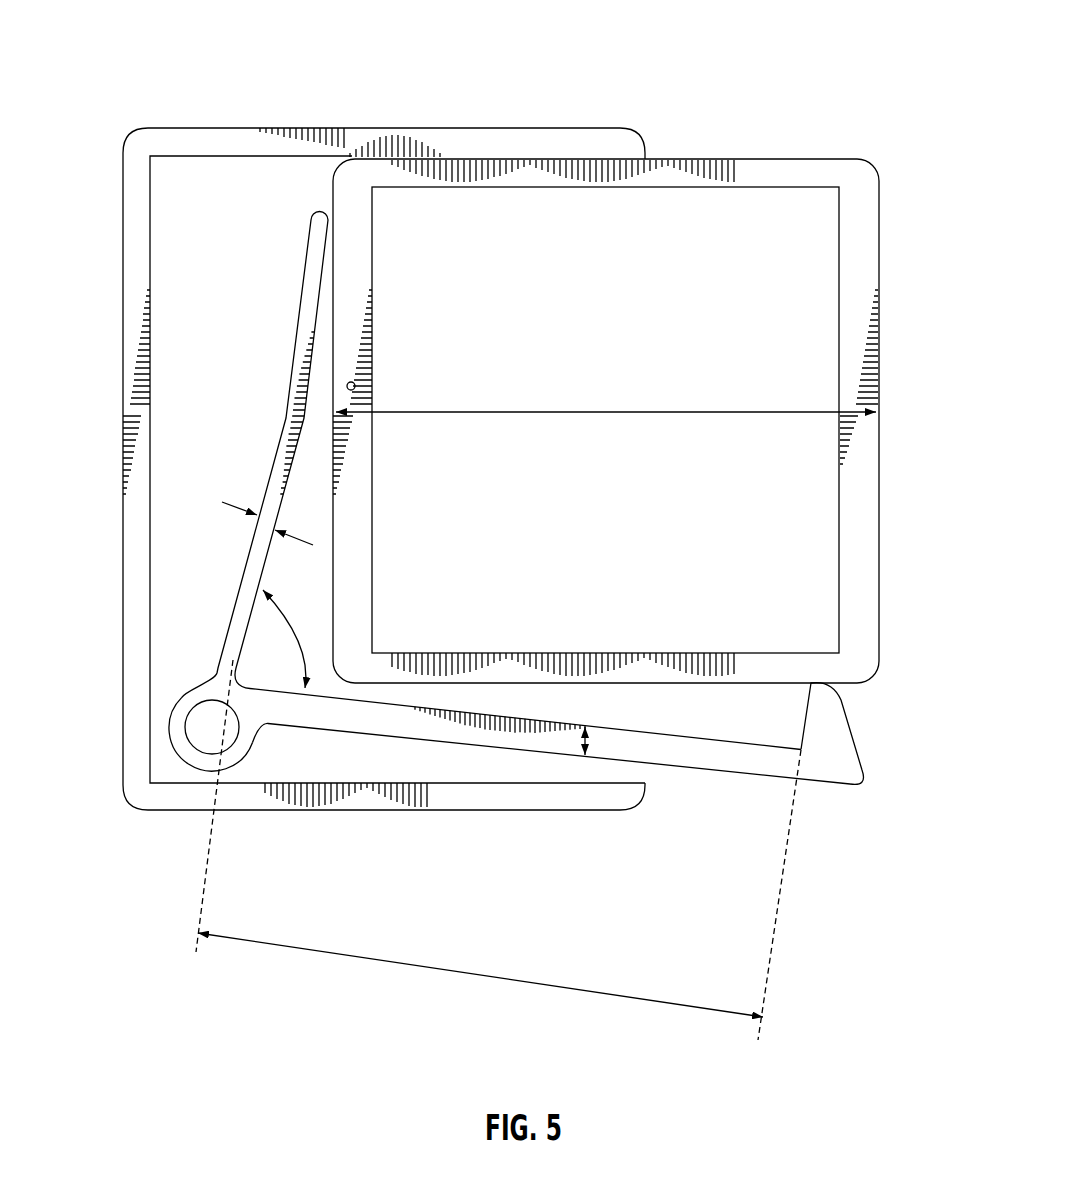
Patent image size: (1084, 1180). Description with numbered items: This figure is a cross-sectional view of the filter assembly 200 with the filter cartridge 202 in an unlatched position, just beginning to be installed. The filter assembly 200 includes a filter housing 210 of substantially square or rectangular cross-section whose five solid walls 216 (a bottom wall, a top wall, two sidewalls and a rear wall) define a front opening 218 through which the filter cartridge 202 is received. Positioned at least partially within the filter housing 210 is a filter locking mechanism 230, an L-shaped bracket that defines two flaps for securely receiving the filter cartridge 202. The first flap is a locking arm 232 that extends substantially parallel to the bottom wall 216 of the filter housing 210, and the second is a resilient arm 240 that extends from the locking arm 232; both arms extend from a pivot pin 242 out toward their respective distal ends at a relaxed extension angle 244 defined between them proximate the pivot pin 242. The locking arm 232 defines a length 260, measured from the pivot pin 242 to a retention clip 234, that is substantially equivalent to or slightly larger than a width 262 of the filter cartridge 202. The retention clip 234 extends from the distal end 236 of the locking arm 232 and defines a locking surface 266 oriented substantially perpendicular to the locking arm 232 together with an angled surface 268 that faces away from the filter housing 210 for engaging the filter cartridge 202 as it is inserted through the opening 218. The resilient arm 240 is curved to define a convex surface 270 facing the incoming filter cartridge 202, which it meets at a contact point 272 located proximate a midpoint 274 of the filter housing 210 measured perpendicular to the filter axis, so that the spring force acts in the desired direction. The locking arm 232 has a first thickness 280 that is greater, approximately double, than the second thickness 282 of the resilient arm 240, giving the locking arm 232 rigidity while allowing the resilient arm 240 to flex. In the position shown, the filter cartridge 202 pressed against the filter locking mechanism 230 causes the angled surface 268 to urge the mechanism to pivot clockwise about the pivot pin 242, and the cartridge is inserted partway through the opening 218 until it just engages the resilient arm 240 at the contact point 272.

The filter assembly 200 is at (633, 58).
The filter cartridge 202 is at (860, 181).
The filter housing 210 is at (122, 222).
The solid walls 216 is at (137, 578).
The front opening 218 is at (655, 773).
The filter locking mechanism 230 is at (501, 634).
The locking arm 232 is at (429, 732).
The retention clip 234 is at (832, 764).
The distal end 236 is at (866, 775).
The resilient arm 240 is at (318, 321).
The pivot pin 242 is at (202, 732).
The extension angle 244 is at (293, 637).
The length 260 is at (463, 976).
The width 262 is at (636, 410).
The locking surface 266 is at (805, 723).
The angled surface 268 is at (856, 737).
The convex surface 270 is at (295, 466).
The contact point 272 is at (333, 273).
The midpoint 274 is at (355, 383).
The first thickness 280 is at (590, 740).
The second thickness 282 is at (240, 500).